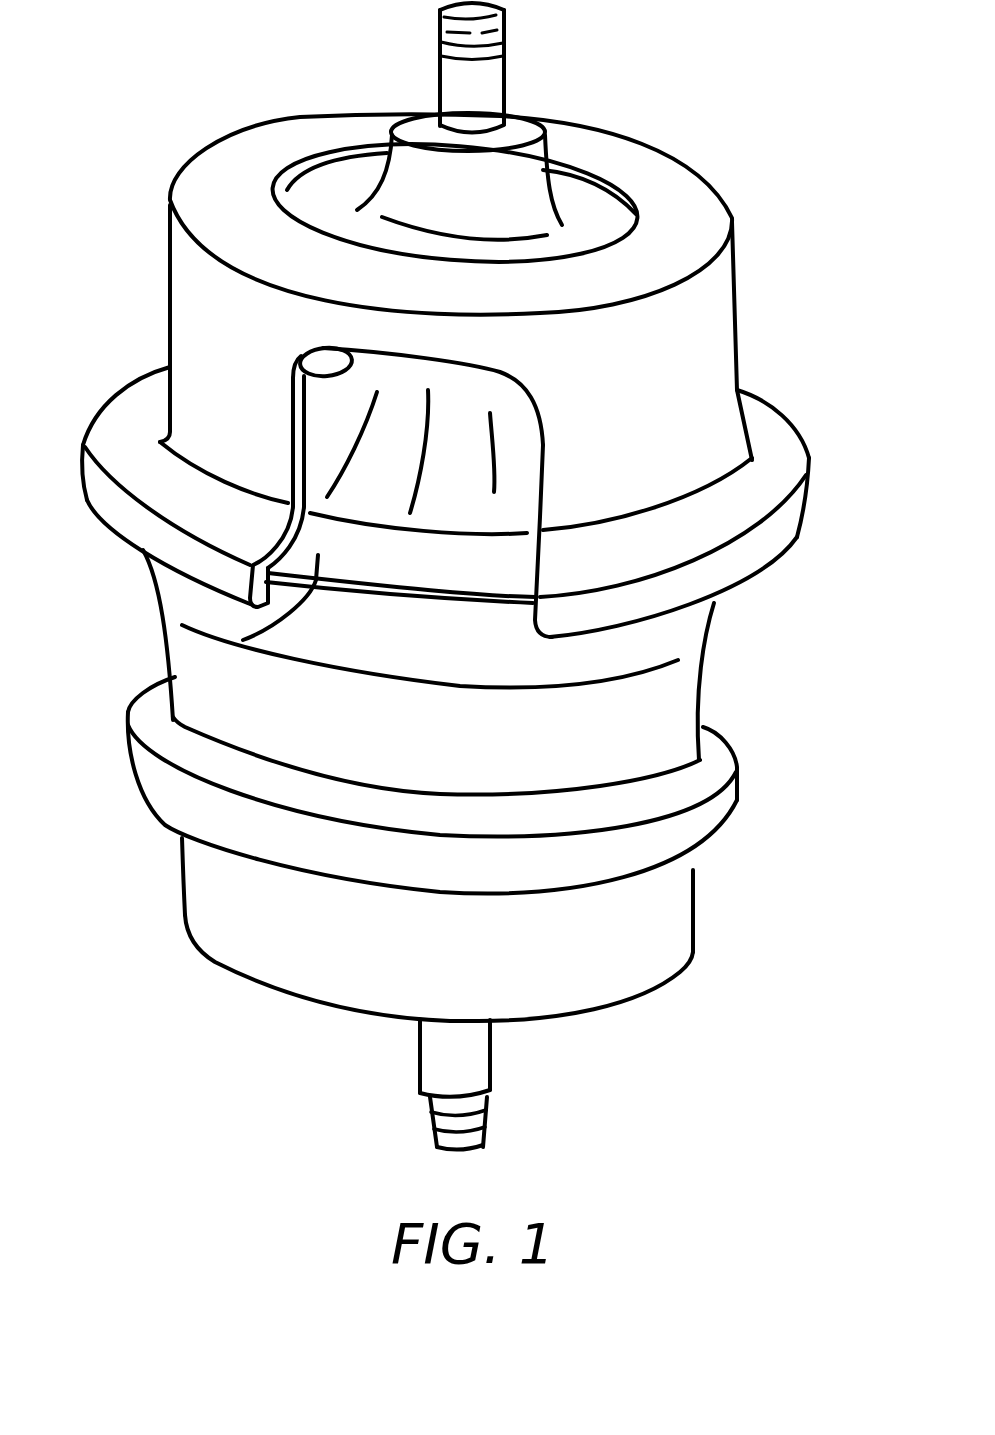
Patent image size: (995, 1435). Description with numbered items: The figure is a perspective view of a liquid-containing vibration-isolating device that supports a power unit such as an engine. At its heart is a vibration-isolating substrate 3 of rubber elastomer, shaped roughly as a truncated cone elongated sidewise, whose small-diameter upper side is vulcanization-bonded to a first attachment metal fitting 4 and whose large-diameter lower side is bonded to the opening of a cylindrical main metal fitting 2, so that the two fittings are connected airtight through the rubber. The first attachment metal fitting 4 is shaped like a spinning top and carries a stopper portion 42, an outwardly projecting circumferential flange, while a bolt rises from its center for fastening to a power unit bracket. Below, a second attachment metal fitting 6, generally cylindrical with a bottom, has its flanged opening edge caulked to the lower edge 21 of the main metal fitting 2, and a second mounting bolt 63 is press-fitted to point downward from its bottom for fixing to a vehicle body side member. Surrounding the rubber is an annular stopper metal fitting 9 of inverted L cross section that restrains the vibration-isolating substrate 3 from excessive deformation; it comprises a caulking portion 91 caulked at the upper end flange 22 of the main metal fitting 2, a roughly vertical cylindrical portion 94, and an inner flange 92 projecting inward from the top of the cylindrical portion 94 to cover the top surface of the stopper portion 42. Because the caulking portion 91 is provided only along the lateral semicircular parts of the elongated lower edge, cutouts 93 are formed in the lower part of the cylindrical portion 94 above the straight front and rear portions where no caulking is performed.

The main metal fitting 2 is at (422, 655).
The vibration-isolating substrate 3 is at (444, 424).
The first attachment metal fitting 4 is at (537, 185).
The second attachment metal fitting 6 is at (482, 913).
The stopper metal fitting 9 is at (473, 268).
The lower edge 21 is at (710, 820).
The upper end flange 22 is at (245, 640).
The stopper portion 42 is at (322, 158).
The second mounting bolt 63 is at (463, 1075).
The caulking portion 91 is at (120, 430).
The inner flange 92 is at (257, 165).
The cutouts 93 is at (298, 373).
The cylindrical portion 94 is at (703, 312).